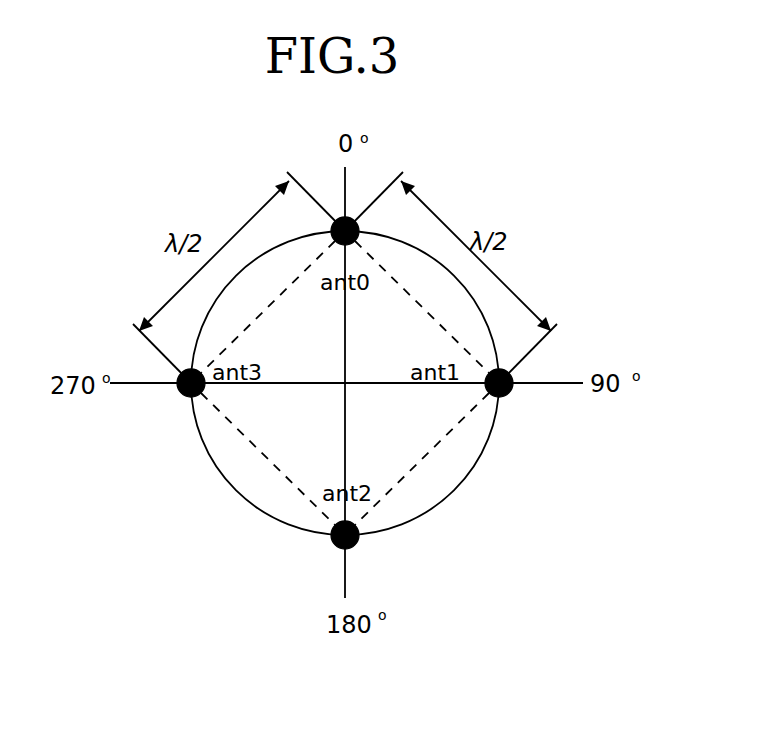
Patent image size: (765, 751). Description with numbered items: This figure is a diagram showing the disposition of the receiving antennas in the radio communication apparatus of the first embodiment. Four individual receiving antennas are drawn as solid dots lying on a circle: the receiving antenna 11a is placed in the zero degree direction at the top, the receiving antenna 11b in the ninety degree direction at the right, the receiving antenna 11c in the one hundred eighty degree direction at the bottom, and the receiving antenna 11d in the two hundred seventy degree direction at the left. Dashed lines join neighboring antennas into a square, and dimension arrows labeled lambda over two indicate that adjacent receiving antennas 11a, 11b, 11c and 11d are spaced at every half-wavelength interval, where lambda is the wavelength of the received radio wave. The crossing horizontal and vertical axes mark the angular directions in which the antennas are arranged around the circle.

The receiving antenna 11a is at (336, 220).
The receiving antenna 11b is at (510, 394).
The receiving antenna 11c is at (336, 546).
The receiving antenna 11d is at (181, 394).